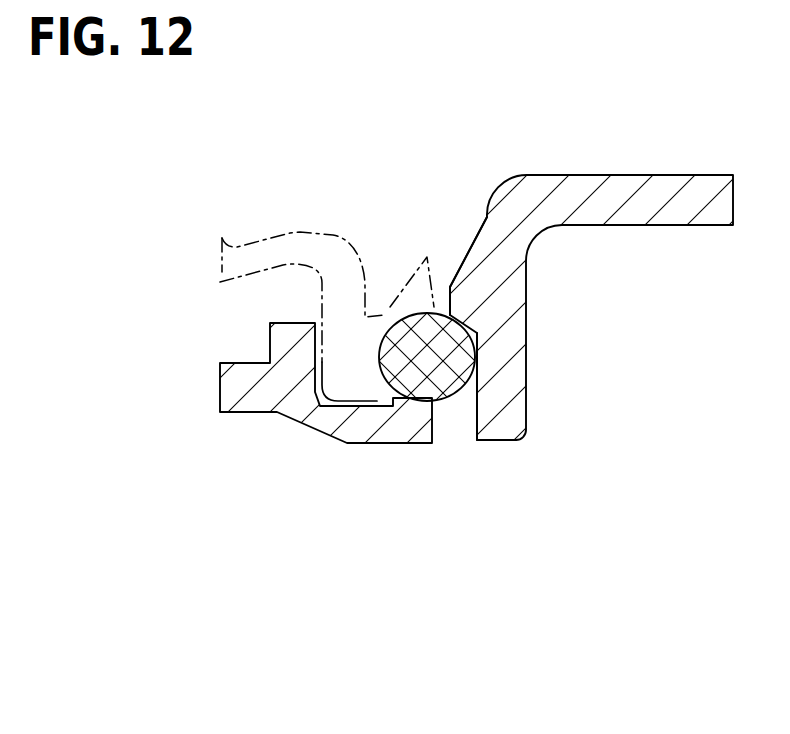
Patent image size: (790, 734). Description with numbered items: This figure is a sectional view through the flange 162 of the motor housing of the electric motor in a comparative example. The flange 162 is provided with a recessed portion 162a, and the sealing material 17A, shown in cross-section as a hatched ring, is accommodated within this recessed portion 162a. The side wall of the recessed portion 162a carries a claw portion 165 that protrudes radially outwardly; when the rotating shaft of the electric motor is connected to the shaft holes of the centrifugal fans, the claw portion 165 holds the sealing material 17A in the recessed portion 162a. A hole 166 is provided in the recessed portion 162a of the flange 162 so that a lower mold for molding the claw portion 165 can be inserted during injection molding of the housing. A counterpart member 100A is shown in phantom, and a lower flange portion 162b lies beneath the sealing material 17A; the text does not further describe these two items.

The mating connector / counterpart member (phantom) 100A is at (292, 235).
The flange 162 is at (675, 225).
The recessed portion 162a is at (305, 434).
The housing flange bottom portion 162b is at (343, 400).
The claw portion 165 is at (457, 300).
The hole 166 is at (463, 425).
The sealing material 17A is at (442, 362).